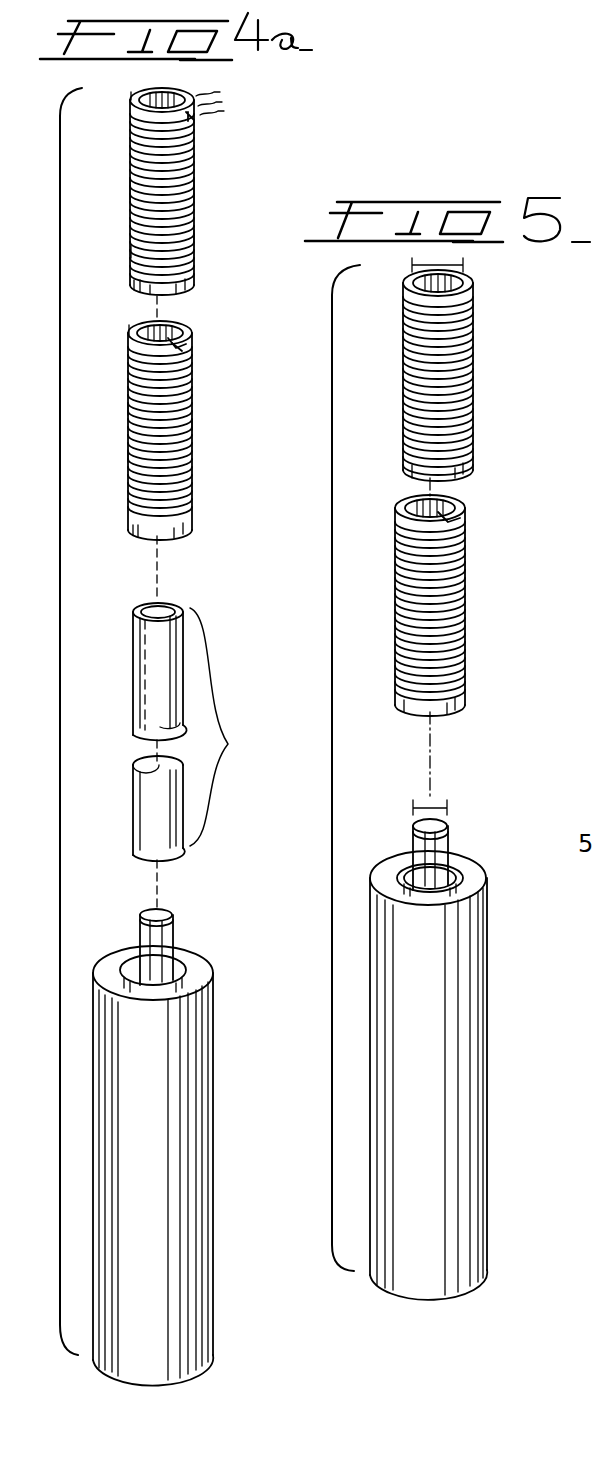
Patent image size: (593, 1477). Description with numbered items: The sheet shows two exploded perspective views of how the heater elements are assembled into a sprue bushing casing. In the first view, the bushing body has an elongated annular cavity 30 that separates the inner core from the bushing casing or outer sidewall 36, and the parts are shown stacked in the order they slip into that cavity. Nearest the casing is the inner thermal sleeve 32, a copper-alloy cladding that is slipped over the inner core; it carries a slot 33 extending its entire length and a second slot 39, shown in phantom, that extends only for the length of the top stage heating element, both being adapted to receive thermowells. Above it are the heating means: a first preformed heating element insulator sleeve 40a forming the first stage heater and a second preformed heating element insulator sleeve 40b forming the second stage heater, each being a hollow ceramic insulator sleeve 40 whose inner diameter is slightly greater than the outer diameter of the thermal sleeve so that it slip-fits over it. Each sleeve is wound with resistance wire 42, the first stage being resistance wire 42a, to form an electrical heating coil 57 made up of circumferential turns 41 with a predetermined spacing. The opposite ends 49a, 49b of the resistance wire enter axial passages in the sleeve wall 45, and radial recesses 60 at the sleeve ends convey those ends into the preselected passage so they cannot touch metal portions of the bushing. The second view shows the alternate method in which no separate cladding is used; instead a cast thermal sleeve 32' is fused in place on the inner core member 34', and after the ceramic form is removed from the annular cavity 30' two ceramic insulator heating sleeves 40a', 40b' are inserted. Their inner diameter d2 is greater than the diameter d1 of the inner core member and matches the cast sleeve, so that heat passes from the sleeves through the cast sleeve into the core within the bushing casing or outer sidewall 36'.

In FIG. 4A, the first preformed heating element insulator sleeve 40a is at (147, 191).
In FIG. 4A, the second preformed heating element insulator sleeve 40b is at (127, 430).
In FIG. 4A, the ceramic insulator sleeve 40 is at (194, 234).
In FIG. 4A, the first stage resistance wire 42a is at (196, 184).
In FIG. 4A, the resistance wire 42 is at (126, 458).
In FIG. 4A, the circumferential turns 41 is at (126, 414).
In FIG. 4A, the sleeve wall 45 is at (134, 95).
In FIG. 4A, the resistance wire end 49a is at (198, 124).
In FIG. 4A, the resistance wire end 49b is at (132, 284).
In FIG. 4A, the electrical heating coil 57 is at (128, 248).
In FIG. 4A, the radial recesses 60 is at (184, 330).
In FIG. 4A, the inner thermal sleeve 32 is at (201, 713).
In FIG. 4A, the slot 33 is at (176, 612).
In FIG. 4A, the second slot 39 is at (138, 662).
In FIG. 4A, the annular cavity 30 is at (179, 949).
In FIG. 4A, the bushing casing or outer sidewall 36 is at (180, 1166).
In FIG. 5, the ceramic insulator heating sleeve 40a' is at (477, 375).
In FIG. 5, the ceramic insulator heating sleeve 40b' is at (473, 605).
In FIG. 5, the annular cavity 30' is at (469, 854).
In FIG. 5, the cast thermal sleeve 32' is at (399, 867).
In FIG. 5, the inner core member 34' is at (396, 828).
In FIG. 5, the bushing casing or outer sidewall 36' is at (453, 1075).
In FIG. 5, the diameter of inner core member d1 is at (432, 805).
In FIG. 5, the inner diameter of heating sleeves d2 is at (440, 265).